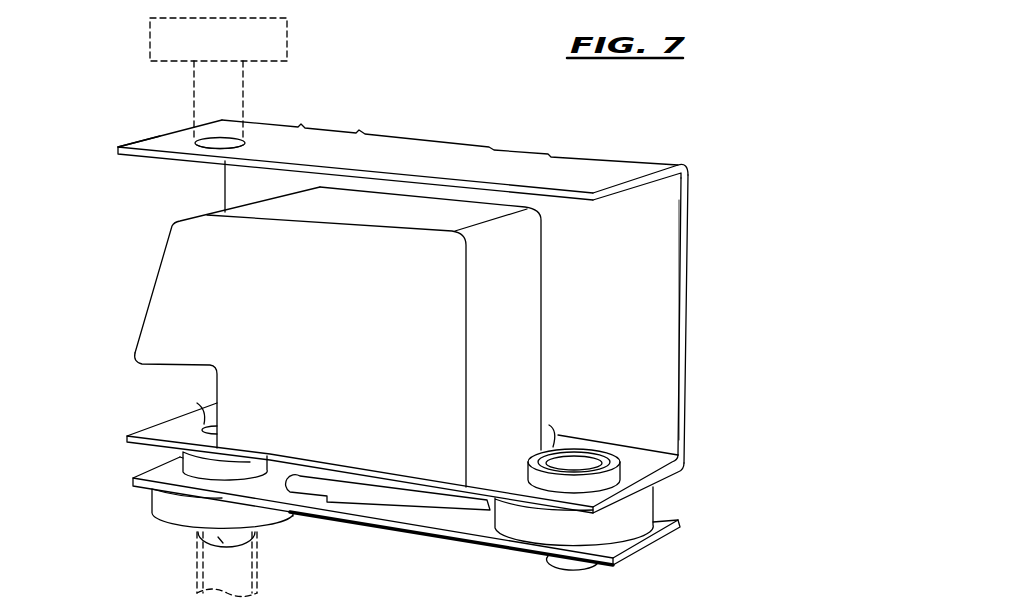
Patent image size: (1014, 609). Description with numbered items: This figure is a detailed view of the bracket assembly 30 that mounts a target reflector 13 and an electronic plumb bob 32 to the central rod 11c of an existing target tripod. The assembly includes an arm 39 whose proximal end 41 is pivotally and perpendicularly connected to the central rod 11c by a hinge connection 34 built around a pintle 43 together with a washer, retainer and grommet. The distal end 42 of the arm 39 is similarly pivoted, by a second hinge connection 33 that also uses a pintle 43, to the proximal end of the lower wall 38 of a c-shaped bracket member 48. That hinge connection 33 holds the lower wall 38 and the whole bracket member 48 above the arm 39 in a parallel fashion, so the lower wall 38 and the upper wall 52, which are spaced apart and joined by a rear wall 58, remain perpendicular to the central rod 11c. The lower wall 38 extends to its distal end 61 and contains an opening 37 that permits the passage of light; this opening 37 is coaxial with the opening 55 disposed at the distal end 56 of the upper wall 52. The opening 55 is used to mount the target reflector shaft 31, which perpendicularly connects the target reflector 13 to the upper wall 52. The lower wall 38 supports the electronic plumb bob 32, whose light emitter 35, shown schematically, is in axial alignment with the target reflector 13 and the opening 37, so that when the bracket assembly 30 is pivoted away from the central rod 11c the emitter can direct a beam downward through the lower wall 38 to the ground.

The target reflector 13 is at (297, 37).
The target reflector shaft 31 is at (243, 88).
The bracket assembly 30 is at (679, 127).
The upper wall 52 is at (403, 152).
The distal end of the upper wall 56 is at (160, 138).
The opening 55 is at (196, 142).
The c-shaped bracket member 48 is at (696, 279).
The rear wall 58 is at (650, 338).
The hinge connection 33 is at (681, 488).
The distal end of the lower wall 61 is at (150, 430).
The opening 37 is at (217, 403).
The electronic plumb bob 32 is at (556, 263).
The light emitter 35 is at (154, 372).
The hinge connection 34 is at (122, 496).
The proximal end of the arm 41 is at (155, 474).
The distal end of the arm 42 is at (652, 533).
The arm 39 is at (334, 526).
The lower wall 38 is at (395, 491).
The pintle 43 is at (178, 549).
The central rod 11c is at (193, 567).